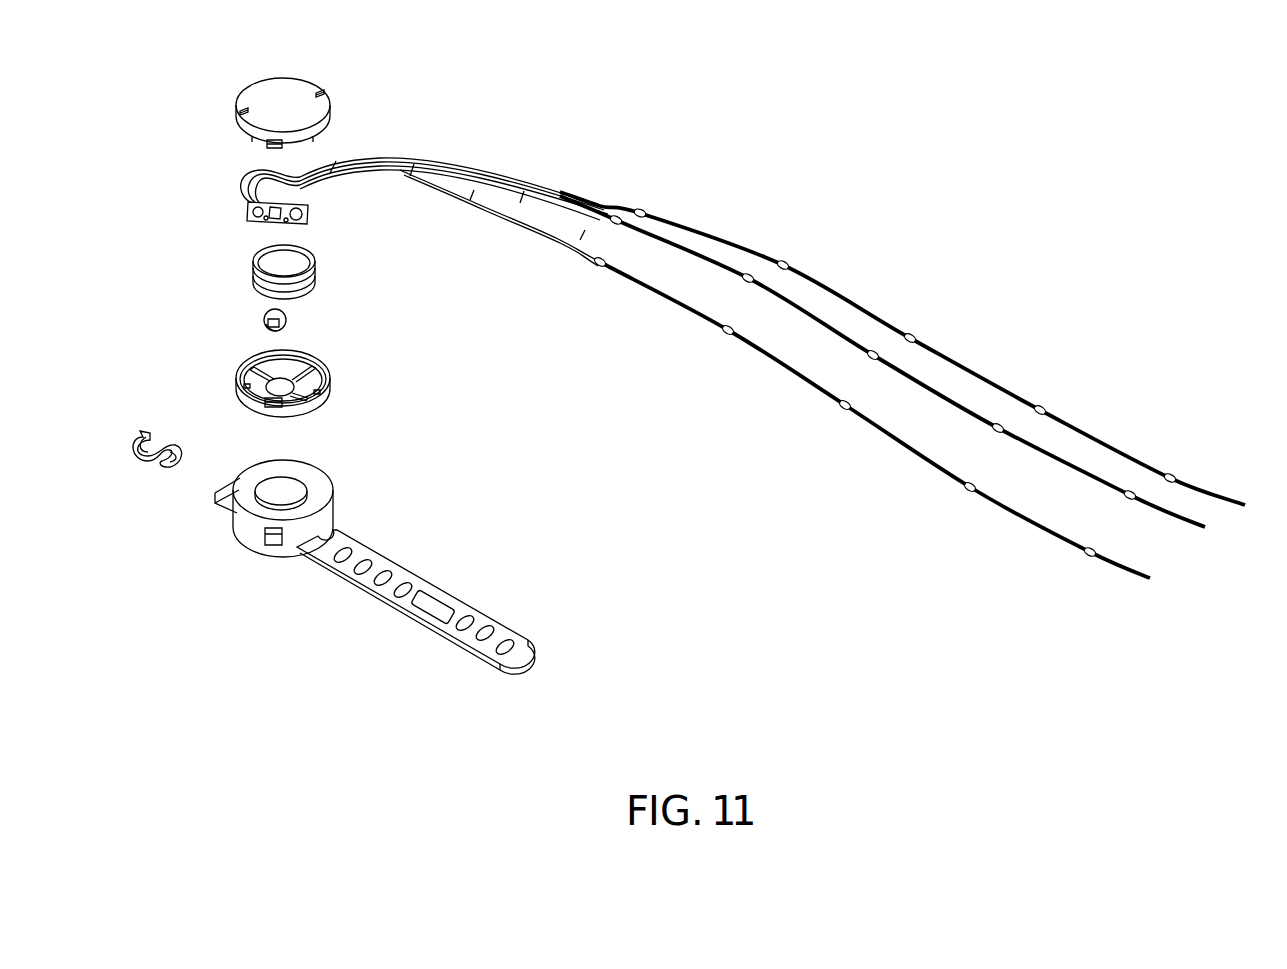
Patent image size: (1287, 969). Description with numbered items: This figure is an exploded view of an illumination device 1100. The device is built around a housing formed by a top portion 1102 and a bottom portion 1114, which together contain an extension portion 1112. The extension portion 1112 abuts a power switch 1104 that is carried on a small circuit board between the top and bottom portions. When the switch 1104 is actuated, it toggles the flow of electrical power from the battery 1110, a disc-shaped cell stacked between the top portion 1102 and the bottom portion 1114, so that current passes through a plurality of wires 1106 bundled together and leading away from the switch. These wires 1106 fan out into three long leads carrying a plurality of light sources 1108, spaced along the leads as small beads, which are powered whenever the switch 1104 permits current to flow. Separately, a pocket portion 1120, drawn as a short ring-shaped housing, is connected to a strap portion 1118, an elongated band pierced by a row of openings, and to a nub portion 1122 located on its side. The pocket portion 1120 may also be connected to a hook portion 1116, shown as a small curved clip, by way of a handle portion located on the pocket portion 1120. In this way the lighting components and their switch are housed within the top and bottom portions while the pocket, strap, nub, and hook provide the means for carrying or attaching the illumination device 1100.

The illumination device 1100 is at (722, 126).
The top portion 1102 is at (311, 86).
The power switch 1104 is at (309, 212).
The plurality of wires 1106 is at (530, 238).
The plurality of light sources 1108 is at (843, 406).
The battery 1110 is at (315, 272).
The extension portion 1112 is at (287, 319).
The bottom portion 1114 is at (326, 390).
The hook portion 1116 is at (145, 425).
The strap portion 1118 is at (420, 574).
The pocket portion 1120 is at (243, 538).
The nub portion 1122 is at (272, 546).